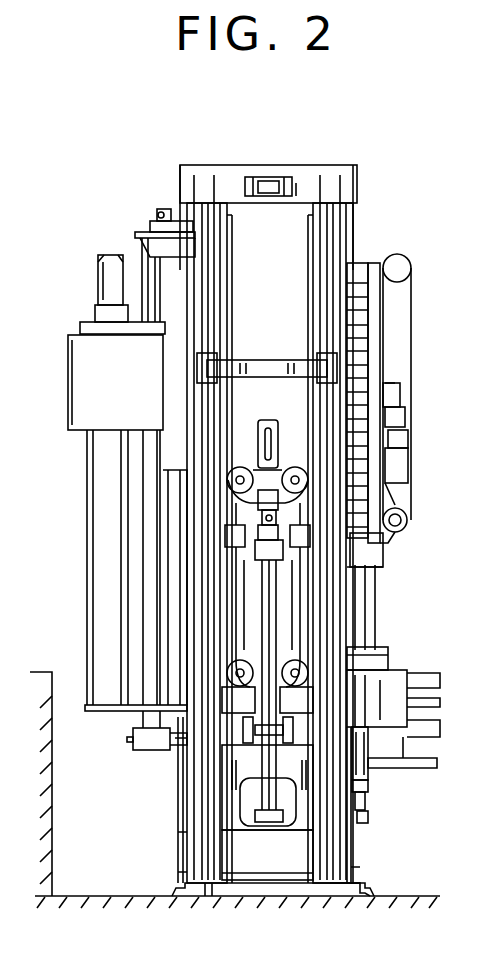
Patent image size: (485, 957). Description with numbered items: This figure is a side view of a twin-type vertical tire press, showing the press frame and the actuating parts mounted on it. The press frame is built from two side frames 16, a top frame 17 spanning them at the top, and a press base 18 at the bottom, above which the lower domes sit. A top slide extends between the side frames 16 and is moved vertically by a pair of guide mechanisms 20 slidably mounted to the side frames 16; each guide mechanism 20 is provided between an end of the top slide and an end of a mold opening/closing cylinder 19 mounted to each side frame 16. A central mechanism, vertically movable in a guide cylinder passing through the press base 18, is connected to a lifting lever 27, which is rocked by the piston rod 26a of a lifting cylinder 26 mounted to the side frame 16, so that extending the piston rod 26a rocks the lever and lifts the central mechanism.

The side frame 16 is at (338, 223).
The top frame 17 is at (302, 182).
The press base 18 is at (233, 769).
The mold opening/closing cylinder 19 is at (280, 620).
The guide mechanism 20 is at (300, 498).
The lifting cylinder 26 is at (373, 763).
The piston rod 26a is at (368, 798).
The lifting lever 27 is at (368, 817).